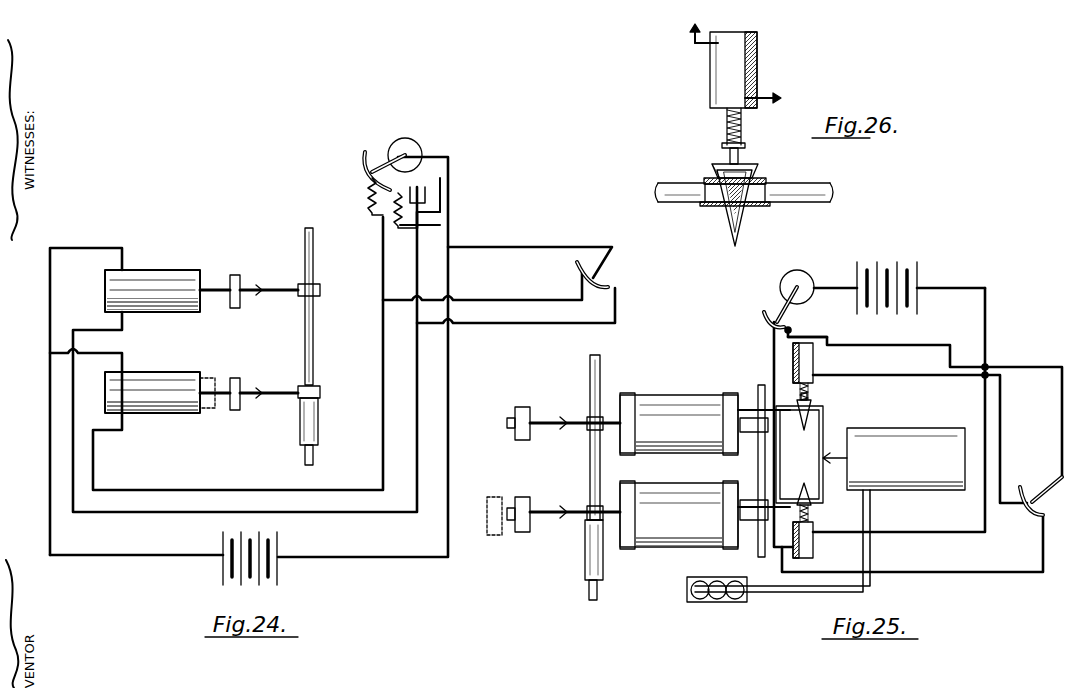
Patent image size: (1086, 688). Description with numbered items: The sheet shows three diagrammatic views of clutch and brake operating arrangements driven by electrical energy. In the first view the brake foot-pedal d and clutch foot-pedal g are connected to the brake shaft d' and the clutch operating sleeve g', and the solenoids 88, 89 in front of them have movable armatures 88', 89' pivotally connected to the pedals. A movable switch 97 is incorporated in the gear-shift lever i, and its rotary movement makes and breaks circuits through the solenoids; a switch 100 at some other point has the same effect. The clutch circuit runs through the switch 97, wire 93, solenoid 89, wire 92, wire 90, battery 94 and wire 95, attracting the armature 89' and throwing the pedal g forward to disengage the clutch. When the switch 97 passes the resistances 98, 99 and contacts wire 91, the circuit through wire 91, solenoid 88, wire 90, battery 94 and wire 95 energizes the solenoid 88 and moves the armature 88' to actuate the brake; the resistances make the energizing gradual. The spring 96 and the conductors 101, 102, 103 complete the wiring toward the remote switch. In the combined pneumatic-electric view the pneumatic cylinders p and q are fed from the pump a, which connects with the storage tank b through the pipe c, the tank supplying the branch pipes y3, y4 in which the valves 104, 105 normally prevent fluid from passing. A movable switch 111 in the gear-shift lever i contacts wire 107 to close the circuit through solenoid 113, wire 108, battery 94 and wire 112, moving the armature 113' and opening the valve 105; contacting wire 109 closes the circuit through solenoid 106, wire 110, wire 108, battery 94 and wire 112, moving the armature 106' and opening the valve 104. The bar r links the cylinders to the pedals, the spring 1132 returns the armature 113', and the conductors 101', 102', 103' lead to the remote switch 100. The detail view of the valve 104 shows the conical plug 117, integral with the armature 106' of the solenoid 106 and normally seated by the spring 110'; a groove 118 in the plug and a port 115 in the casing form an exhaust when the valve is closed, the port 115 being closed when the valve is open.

In FIG. 24, the solenoid 88 is at (152, 269).
In FIG. 24, the movable armature 88' is at (249, 267).
In FIG. 24, the solenoid 89 is at (152, 376).
In FIG. 24, the movable armature 89' is at (249, 374).
In FIG. 24, the wire 90 is at (50, 287).
In FIG. 24, the wire 91 is at (122, 326).
In FIG. 24, the wire 92 is at (122, 351).
In FIG. 24, the wire 93 is at (383, 277).
In FIG. 24, the battery 94 is at (263, 568).
In FIG. 25, the battery 94 is at (902, 278).
In FIG. 24, the wire 95 is at (428, 560).
In FIG. 24, the spring 96 is at (368, 193).
In FIG. 24, the movable switch 97 is at (392, 157).
In FIG. 24, the resistance 98 is at (442, 182).
In FIG. 24, the resistance 99 is at (428, 195).
In FIG. 24, the switch 100 is at (612, 262).
In FIG. 25, the switch 100 is at (1050, 482).
In FIG. 24, the conductor 101 is at (530, 243).
In FIG. 24, the conductor 102 is at (482, 323).
In FIG. 24, the conductor 103 is at (516, 331).
In FIG. 26, the valve 104 is at (757, 173).
In FIG. 25, the valve 104 is at (800, 440).
In FIG. 25, the valve 105 is at (797, 478).
In FIG. 26, the solenoid 106 is at (762, 70).
In FIG. 25, the solenoid 106 is at (829, 363).
In FIG. 26, the movable armature 106' is at (698, 126).
In FIG. 25, the movable armature 106' is at (823, 391).
In FIG. 25, the wire 107 is at (772, 334).
In FIG. 25, the wire 108 is at (988, 345).
In FIG. 26, the wire 109 is at (700, 45).
In FIG. 25, the wire 109 is at (826, 334).
In FIG. 26, the wire 110 is at (770, 108).
In FIG. 25, the wire 110 is at (920, 439).
In FIG. 26, the spring 110' is at (757, 145).
In FIG. 25, the movable switch 111 is at (768, 313).
In FIG. 25, the wire 112 is at (841, 291).
In FIG. 25, the solenoid 113 is at (821, 541).
In FIG. 25, the armature 113' is at (784, 519).
In FIG. 25, the solenoid spring 1132 is at (809, 516).
In FIG. 26, the port 115 is at (720, 166).
In FIG. 26, the conical plug 117 is at (755, 186).
In FIG. 26, the groove 118 is at (710, 179).
In FIG. 25, the conductor 101' is at (1037, 379).
In FIG. 25, the conductor 102' is at (924, 399).
In FIG. 25, the conductor 103' is at (912, 561).
In FIG. 24, the gear-shift lever i is at (408, 143).
In FIG. 25, the gear-shift lever i is at (804, 277).
In FIG. 24, the foot-pedal d is at (297, 272).
In FIG. 25, the foot-pedal d is at (563, 410).
In FIG. 24, the brake shaft d' is at (321, 356).
In FIG. 25, the brake shaft d' is at (580, 489).
In FIG. 24, the foot-pedal g is at (298, 375).
In FIG. 25, the foot-pedal g is at (553, 502).
In FIG. 24, the clutch operating sleeve g' is at (323, 421).
In FIG. 25, the clutch operating sleeve g' is at (580, 560).
In FIG. 25, the pneumatic cylinder p is at (660, 420).
In FIG. 25, the pneumatic cylinder q is at (660, 530).
In FIG. 25, the bar r is at (758, 462).
In FIG. 25, the storage tank b is at (906, 459).
In FIG. 25, the pump a is at (717, 603).
In FIG. 25, the pipe c is at (788, 593).
In FIG. 26, the branch pipe y3 is at (680, 203).
In FIG. 25, the branch pipe y3 is at (823, 415).
In FIG. 25, the branch pipe y4 is at (822, 492).